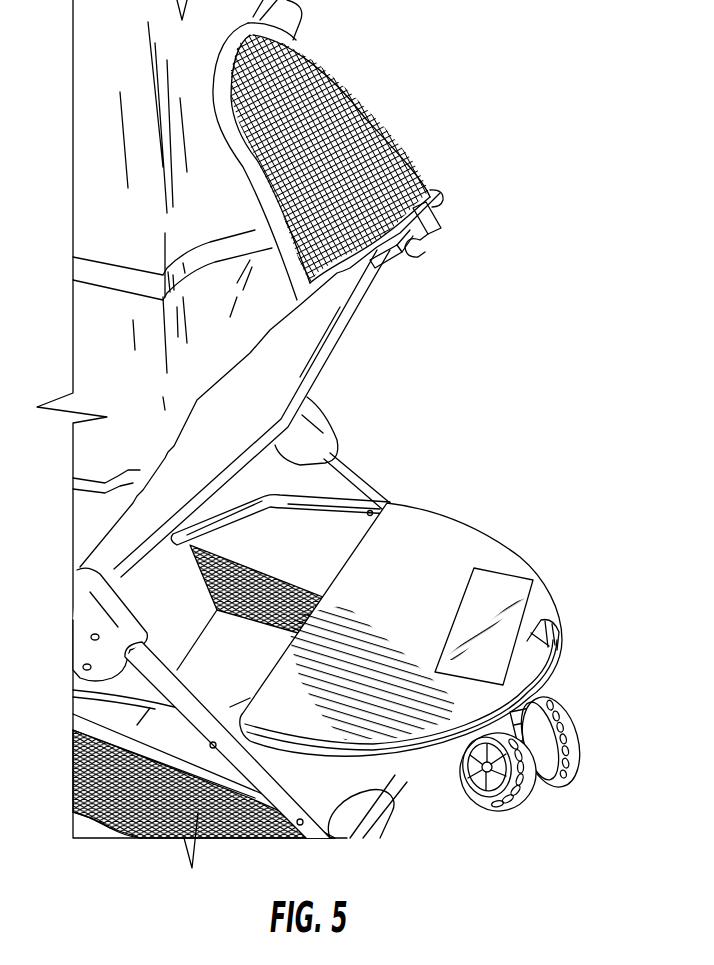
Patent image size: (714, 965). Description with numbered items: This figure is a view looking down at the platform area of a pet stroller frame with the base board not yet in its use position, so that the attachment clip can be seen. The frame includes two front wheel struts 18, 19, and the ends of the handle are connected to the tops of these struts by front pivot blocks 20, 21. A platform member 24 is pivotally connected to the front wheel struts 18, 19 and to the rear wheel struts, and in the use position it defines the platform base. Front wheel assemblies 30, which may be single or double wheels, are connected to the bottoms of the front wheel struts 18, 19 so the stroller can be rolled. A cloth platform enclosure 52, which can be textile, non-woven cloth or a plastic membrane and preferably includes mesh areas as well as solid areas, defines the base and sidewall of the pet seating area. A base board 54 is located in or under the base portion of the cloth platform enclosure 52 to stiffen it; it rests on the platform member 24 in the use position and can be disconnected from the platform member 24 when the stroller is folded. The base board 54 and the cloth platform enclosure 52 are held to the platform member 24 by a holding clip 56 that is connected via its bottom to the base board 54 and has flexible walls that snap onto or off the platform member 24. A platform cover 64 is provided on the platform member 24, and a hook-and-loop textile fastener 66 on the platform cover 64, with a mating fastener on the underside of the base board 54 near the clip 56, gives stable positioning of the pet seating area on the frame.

The front wheel strut 18 is at (270, 775).
The front wheel strut 19 is at (357, 463).
The front pivot block 20 is at (120, 612).
The front pivot block 21 is at (330, 422).
The platform member 24 is at (337, 497).
The front wheel assembly 30 is at (550, 703).
The cloth platform enclosure 52 is at (363, 103).
The base board 54 is at (335, 335).
The holding clip 56 is at (445, 226).
The platform cover 64 is at (462, 537).
The hook-and-loop textile fastener 66 is at (507, 587).